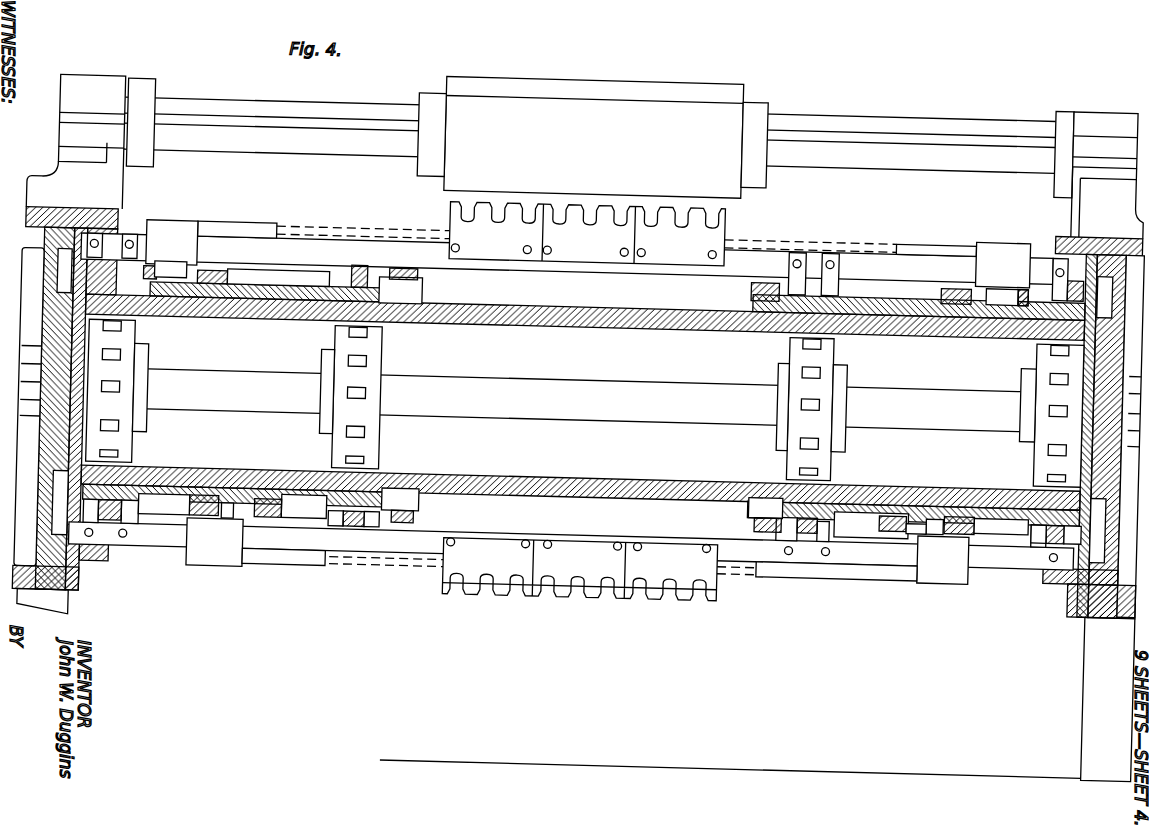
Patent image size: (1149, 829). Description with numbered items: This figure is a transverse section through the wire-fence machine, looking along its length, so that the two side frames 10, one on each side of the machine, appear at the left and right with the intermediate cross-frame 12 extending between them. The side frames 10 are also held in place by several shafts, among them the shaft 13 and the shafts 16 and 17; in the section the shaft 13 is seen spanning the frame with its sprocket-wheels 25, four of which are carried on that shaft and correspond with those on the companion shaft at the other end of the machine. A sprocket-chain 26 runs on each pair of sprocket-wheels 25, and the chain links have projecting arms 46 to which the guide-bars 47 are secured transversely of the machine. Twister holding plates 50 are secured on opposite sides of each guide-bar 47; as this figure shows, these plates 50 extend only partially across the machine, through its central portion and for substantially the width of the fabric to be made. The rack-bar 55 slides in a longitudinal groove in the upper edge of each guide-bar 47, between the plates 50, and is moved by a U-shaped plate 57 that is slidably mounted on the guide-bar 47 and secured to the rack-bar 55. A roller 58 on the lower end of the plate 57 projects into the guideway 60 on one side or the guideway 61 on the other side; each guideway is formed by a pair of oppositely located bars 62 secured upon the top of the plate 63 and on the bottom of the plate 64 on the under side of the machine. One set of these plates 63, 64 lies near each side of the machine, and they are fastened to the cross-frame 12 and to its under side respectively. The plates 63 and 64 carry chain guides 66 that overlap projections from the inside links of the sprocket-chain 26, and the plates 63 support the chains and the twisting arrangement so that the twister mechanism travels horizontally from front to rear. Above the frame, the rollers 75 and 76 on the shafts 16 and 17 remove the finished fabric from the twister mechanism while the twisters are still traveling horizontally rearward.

The side frame 10 is at (75, 618).
The cross-frame 12 is at (548, 320).
The shaft 13 is at (654, 383).
The shaft 16 is at (874, 164).
The shaft 17 is at (823, 115).
The sprocket-wheel 25 is at (136, 456).
The sprocket-chain 26 is at (341, 276).
The projecting arm 46 is at (329, 256).
The guide-bar 47 is at (1016, 577).
The twister holding plate 50 is at (444, 211).
The rack-bar 55 is at (291, 573).
The U-shaped plate 57 is at (998, 234).
The roller 58 is at (1001, 287).
The guideway 60 is at (184, 280).
The guideway 61 is at (990, 289).
The bar 62 is at (228, 288).
The plate 63 is at (253, 305).
The plate 64 is at (295, 485).
The chain guide 66 is at (421, 272).
The roller 75 is at (756, 190).
The roller 76 is at (700, 86).